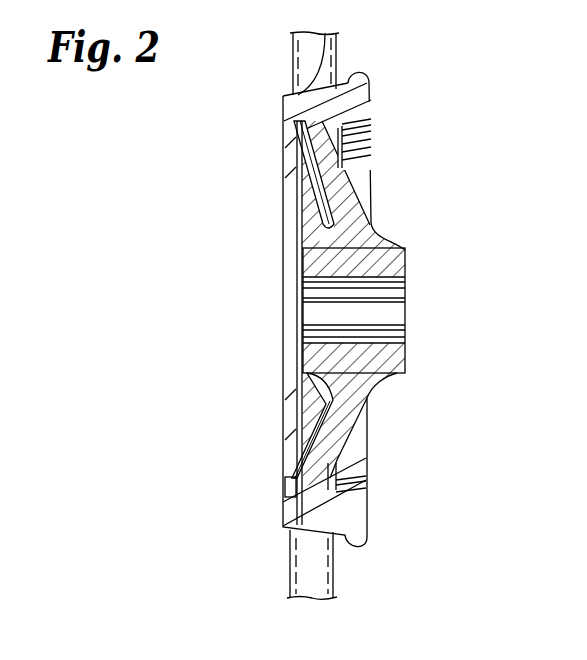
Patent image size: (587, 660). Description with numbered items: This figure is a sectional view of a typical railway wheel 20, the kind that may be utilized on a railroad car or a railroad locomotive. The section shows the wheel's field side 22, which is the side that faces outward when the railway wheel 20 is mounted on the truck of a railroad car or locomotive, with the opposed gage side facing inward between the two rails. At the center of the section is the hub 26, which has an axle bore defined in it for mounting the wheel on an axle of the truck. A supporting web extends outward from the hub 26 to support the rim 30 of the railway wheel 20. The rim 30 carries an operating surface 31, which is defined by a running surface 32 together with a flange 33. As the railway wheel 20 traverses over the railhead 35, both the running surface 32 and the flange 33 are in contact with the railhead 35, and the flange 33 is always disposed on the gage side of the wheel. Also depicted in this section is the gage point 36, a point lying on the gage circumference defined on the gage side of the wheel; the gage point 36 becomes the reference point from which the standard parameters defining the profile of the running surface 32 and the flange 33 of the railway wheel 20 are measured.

The railway wheel 20 is at (270, 154).
The field side 22 is at (281, 203).
The hub 26 is at (388, 260).
The rim 30 is at (352, 103).
The operating surface 31 is at (293, 33).
The running surface 32 is at (297, 90).
The flange 33 is at (361, 78).
The railhead 35 is at (307, 70).
The gage point 36 is at (366, 118).